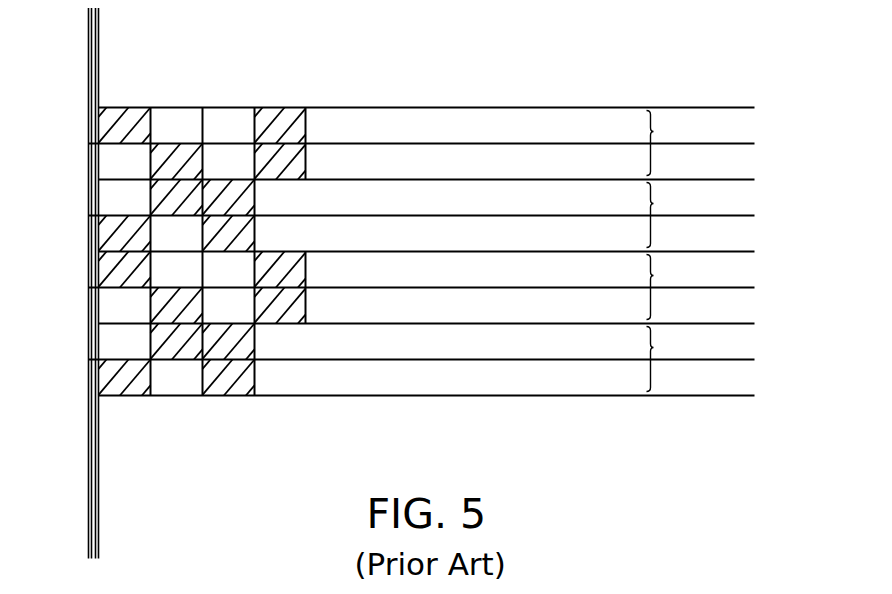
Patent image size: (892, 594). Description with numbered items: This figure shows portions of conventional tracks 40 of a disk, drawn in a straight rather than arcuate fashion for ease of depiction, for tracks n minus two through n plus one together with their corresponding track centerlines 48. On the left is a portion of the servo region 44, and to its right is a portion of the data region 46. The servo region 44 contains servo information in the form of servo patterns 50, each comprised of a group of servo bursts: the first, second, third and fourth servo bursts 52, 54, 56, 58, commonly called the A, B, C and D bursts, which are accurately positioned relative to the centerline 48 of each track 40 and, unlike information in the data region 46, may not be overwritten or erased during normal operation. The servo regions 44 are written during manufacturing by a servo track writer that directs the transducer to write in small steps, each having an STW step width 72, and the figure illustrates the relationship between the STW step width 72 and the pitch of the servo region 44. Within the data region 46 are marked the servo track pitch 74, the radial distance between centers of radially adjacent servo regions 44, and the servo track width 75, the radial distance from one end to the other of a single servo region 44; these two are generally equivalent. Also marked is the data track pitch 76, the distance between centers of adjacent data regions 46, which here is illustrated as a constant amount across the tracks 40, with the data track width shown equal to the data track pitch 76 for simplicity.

The track 40 is at (760, 108).
The servo region 44 is at (297, 403).
The data region 46 is at (310, 402).
The track centerline 48 is at (86, 141).
The servo pattern 50 is at (300, 52).
The first servo burst 52 is at (125, 223).
The second servo burst 54 is at (177, 205).
The third servo burst 56 is at (229, 223).
The fourth servo burst 58 is at (280, 187).
The STW step width 72 is at (323, 109).
The servo track pitch 74 is at (379, 213).
The servo track width 75 is at (456, 249).
The data track pitch 76 is at (521, 213).